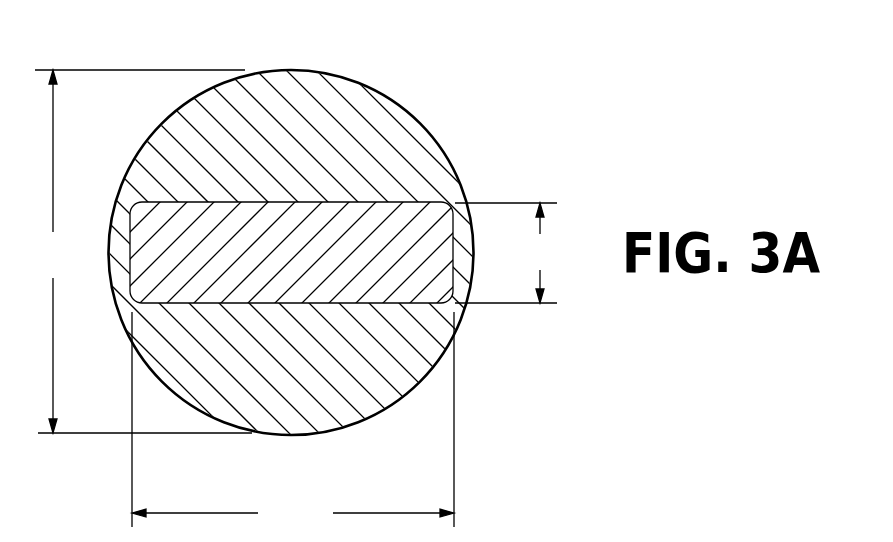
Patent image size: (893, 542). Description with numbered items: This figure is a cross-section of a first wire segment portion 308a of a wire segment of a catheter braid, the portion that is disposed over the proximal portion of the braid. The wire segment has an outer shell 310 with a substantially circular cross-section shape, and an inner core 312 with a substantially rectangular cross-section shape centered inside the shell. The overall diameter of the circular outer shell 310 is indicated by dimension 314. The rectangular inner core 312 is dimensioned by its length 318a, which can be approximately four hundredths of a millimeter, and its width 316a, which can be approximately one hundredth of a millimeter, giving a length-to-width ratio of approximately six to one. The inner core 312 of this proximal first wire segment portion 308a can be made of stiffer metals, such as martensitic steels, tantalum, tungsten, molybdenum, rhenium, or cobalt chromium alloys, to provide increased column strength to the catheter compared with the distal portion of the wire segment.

The first wire segment portion 308a is at (420, 224).
The outer shell 310 is at (278, 78).
The inner core 312 is at (309, 290).
The outer diameter 314 is at (142, 251).
The width of the inner core 316a is at (511, 253).
The length of the inner core 318a is at (293, 420).